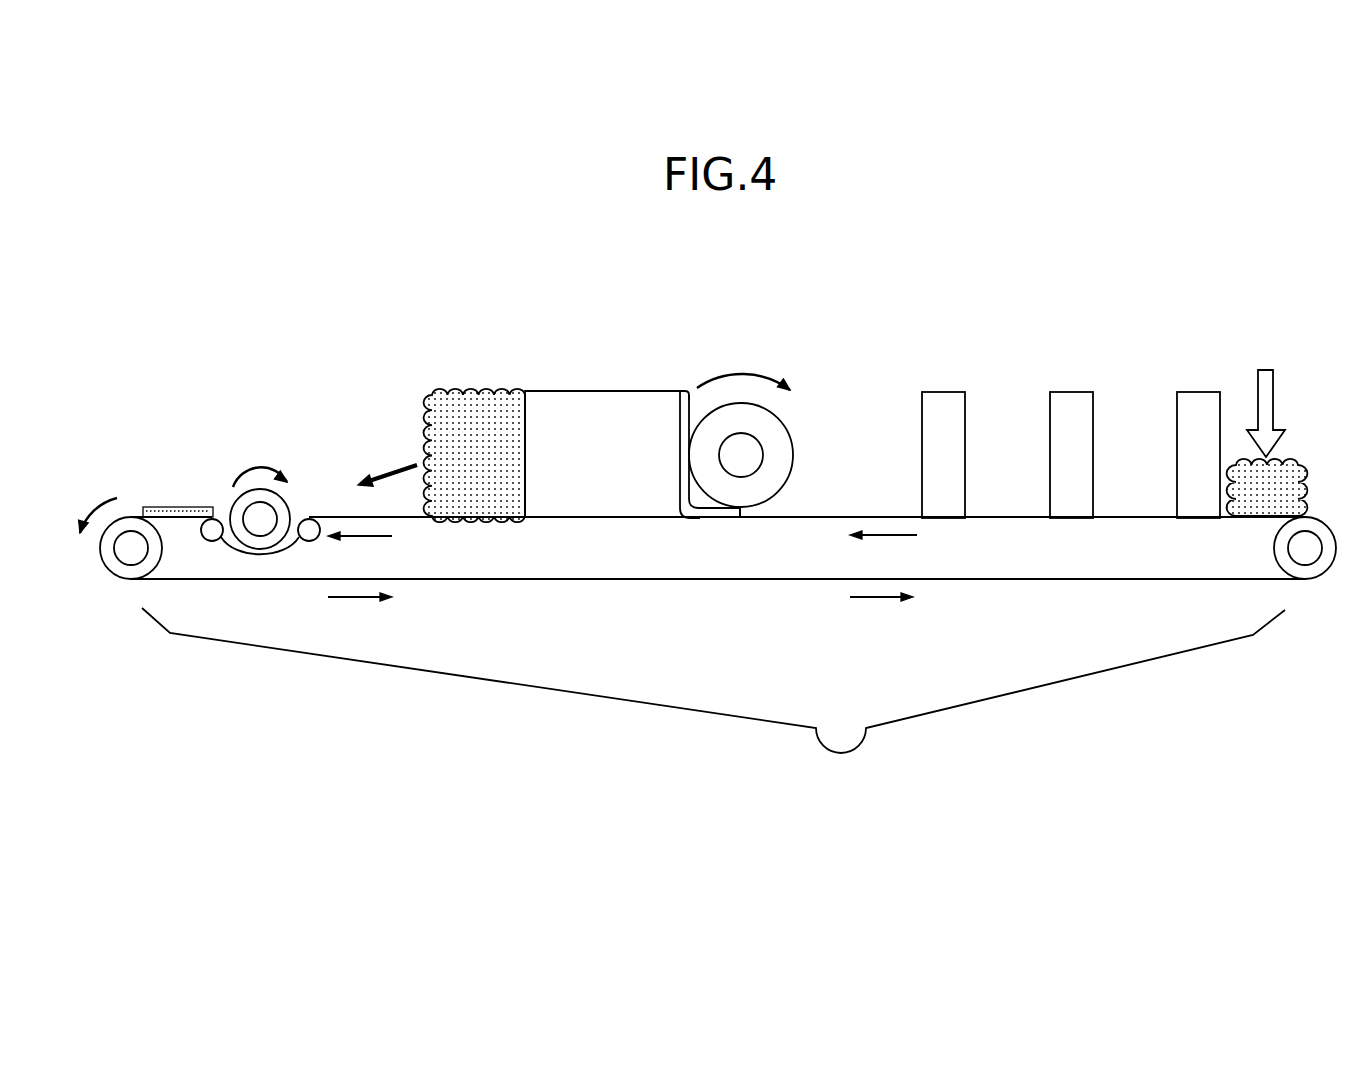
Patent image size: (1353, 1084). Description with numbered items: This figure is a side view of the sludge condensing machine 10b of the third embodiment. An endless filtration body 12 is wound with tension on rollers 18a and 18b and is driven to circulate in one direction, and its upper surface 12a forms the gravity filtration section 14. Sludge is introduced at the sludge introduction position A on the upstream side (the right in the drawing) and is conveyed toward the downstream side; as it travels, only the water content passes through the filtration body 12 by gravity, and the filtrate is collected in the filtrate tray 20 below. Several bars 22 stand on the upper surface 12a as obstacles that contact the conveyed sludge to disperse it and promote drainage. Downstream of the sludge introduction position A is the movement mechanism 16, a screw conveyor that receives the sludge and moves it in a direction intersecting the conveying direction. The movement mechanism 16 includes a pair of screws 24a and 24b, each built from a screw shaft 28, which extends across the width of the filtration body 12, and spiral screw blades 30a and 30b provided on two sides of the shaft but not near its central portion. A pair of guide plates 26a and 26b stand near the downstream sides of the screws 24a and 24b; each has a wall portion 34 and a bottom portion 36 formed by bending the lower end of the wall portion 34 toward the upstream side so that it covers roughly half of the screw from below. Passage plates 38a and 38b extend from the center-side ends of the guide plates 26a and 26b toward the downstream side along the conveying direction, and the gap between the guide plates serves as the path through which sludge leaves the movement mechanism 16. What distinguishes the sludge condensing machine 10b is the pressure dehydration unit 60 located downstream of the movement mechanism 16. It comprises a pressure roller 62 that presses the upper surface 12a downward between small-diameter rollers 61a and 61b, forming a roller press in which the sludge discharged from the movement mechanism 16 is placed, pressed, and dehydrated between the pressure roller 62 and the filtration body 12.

The sludge condensing machine 10b is at (190, 315).
The filtration body 12 is at (969, 588).
The upper surface 12a is at (833, 517).
The gravity filtration section 14 is at (927, 309).
The movement mechanism 16 is at (761, 294).
The roller 18a is at (1312, 575).
The roller 18b is at (130, 570).
The filtrate tray 20 is at (992, 700).
The bar 22 is at (943, 398).
The screw 24a is at (803, 385).
The screw 24b is at (775, 410).
The guide plate 26a is at (687, 398).
The guide plate 26b is at (692, 399).
The screw shaft 28 is at (753, 453).
The screw blade 30a is at (717, 483).
The screw blade 30b is at (666, 579).
The wall portion 34 is at (683, 420).
The bottom portion 36 is at (732, 520).
The passage plate 38a is at (553, 407).
The passage plate 38b is at (556, 414).
The pressure dehydration unit 60 is at (276, 439).
The small-diameter roller 61a is at (217, 541).
The small-diameter roller 61b is at (310, 541).
The pressure roller 62 is at (242, 508).
The sludge introduction position A is at (1266, 396).